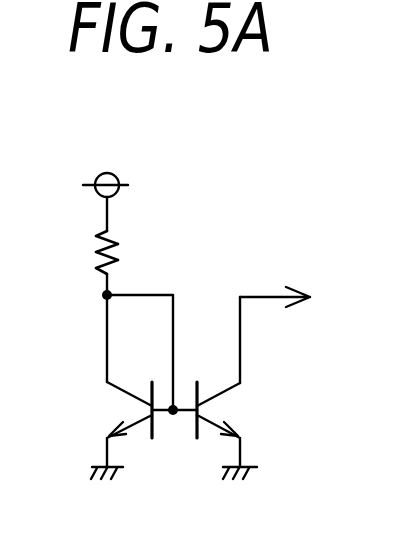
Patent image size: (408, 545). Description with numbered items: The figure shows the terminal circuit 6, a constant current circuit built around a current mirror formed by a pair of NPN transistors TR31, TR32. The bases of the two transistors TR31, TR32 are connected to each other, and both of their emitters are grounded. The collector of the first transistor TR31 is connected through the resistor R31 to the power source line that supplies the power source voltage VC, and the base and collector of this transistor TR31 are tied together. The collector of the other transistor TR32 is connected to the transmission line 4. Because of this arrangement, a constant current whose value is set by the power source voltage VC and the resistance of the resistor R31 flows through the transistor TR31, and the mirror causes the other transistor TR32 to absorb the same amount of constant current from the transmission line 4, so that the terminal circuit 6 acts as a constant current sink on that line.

The terminal circuit 6 is at (253, 195).
The transmission line 4 is at (264, 296).
The resistor R31 is at (111, 263).
The NPN transistor TR31 is at (139, 410).
The NPN transistor TR32 is at (210, 410).